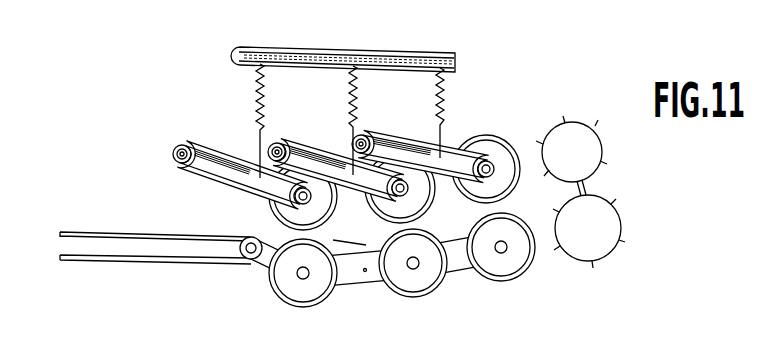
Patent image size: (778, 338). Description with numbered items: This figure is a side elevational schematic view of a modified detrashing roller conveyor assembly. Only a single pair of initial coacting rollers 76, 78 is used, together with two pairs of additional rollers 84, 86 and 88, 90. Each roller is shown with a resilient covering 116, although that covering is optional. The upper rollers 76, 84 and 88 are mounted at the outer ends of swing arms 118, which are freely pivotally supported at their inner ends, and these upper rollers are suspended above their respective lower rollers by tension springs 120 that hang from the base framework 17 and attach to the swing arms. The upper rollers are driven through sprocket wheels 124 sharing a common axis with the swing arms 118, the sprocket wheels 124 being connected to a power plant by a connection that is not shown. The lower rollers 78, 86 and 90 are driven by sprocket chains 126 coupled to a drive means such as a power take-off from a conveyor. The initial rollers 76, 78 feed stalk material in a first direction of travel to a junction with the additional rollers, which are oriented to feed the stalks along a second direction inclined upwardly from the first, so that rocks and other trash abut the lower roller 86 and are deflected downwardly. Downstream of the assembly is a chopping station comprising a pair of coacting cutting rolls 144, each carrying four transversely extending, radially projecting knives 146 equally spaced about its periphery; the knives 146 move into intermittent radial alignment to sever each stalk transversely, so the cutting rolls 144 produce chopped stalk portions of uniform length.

The base framework 17 is at (455, 57).
The tension springs 120 is at (444, 100).
The swing arms 118 is at (227, 166).
The sprocket wheels 124 is at (205, 177).
The initial upper roller 76 is at (290, 206).
The additional upper roller 84 is at (413, 200).
The additional upper roller 88 is at (481, 190).
The initial lower roller 78 is at (300, 293).
The additional lower roller 86 is at (424, 282).
The additional lower roller 90 is at (498, 265).
The sprocket chains 126 is at (352, 285).
The resilient covering 116 is at (535, 260).
The cutting rolls 144 is at (583, 151).
The knives 146 is at (592, 128).